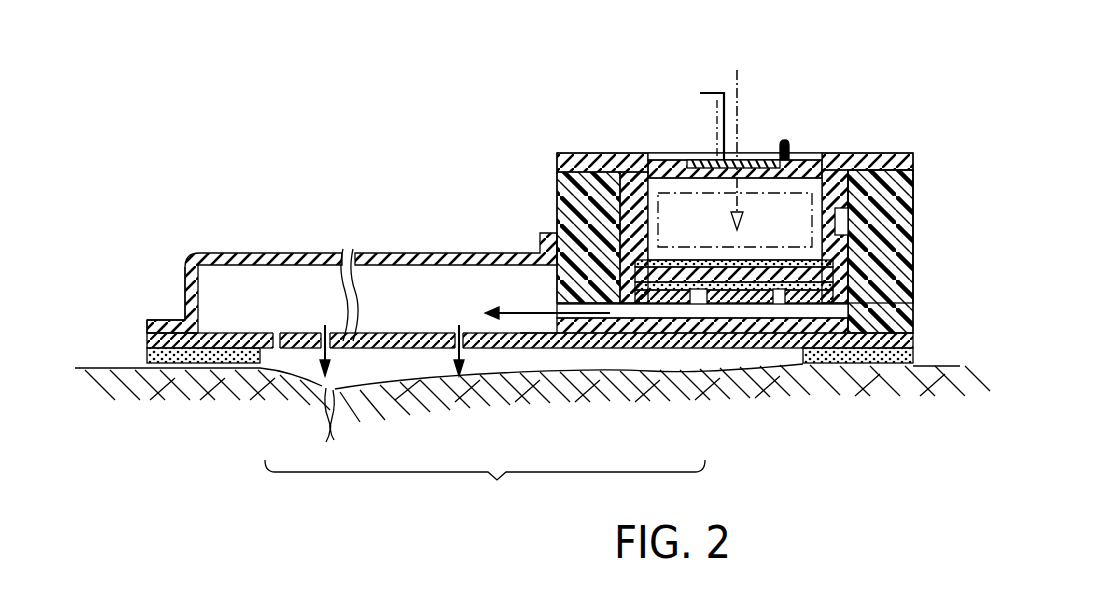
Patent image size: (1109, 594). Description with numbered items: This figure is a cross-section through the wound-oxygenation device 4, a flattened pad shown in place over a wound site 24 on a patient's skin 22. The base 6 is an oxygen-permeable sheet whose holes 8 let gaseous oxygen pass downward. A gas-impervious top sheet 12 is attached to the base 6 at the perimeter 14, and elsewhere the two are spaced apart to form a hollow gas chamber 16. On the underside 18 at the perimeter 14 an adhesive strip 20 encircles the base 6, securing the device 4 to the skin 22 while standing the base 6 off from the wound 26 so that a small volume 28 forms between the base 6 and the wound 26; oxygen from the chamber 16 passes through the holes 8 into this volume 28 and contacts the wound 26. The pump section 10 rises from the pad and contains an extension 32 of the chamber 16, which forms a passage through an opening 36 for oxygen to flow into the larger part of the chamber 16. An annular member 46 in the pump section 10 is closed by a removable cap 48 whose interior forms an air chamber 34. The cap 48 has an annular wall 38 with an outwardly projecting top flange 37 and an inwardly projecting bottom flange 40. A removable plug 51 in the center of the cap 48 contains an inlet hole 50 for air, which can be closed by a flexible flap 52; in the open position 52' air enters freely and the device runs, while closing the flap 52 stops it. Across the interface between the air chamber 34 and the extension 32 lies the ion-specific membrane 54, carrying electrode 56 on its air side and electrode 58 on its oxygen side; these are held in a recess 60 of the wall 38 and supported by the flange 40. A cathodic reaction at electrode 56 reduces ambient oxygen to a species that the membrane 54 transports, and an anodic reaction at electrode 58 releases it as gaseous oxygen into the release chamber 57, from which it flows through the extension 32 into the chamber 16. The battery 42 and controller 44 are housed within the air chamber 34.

The device 4 is at (484, 197).
The base 6 is at (148, 340).
The holes 8 is at (273, 337).
The pump section 10 is at (918, 265).
The top sheet 12 is at (208, 254).
The perimeter 14 is at (167, 321).
The gas chamber 16 is at (321, 280).
The underside 18 is at (163, 370).
The adhesive strip 20 is at (150, 358).
The skin 22 is at (215, 387).
The wound site 24 is at (485, 488).
The wound 26 is at (662, 388).
The volume 28 is at (555, 379).
The extension 32 is at (702, 349).
The air chamber 34 is at (637, 163).
The opening 36 is at (553, 310).
The top flange 37 is at (888, 152).
The annular wall 38 is at (625, 210).
The bottom flange 40 is at (790, 300).
The battery 42 is at (688, 193).
The controller 44 is at (840, 222).
The annular member 46 is at (913, 234).
The removable cap 48 is at (582, 153).
The inlet hole 50 is at (760, 160).
The removable plug 51 is at (706, 160).
The flap 52 is at (759, 149).
The flap open position 52' is at (691, 106).
The ion-specific membrane 54 is at (747, 261).
The electrode 56 is at (702, 262).
The release chamber 57 is at (770, 298).
The electrode 58 is at (722, 288).
The recess 60 is at (900, 292).